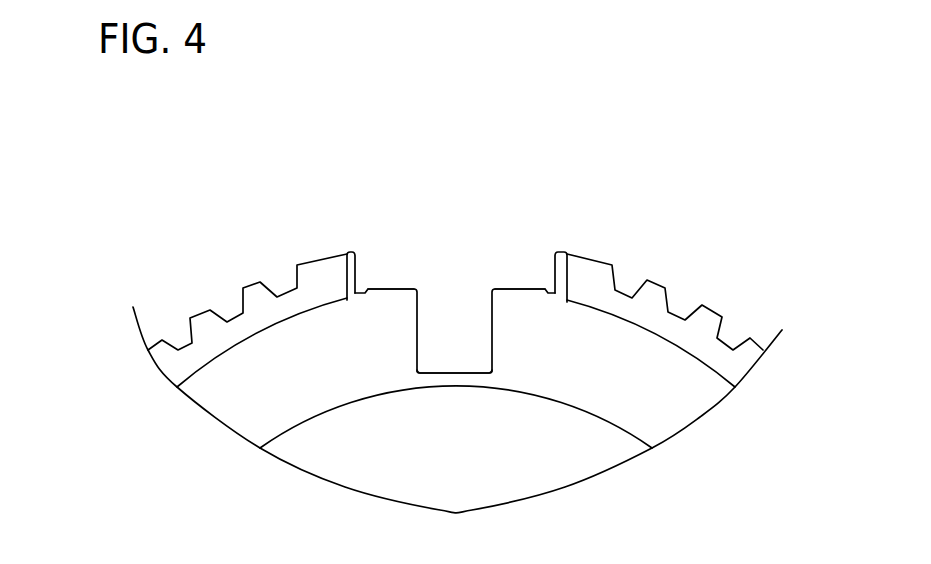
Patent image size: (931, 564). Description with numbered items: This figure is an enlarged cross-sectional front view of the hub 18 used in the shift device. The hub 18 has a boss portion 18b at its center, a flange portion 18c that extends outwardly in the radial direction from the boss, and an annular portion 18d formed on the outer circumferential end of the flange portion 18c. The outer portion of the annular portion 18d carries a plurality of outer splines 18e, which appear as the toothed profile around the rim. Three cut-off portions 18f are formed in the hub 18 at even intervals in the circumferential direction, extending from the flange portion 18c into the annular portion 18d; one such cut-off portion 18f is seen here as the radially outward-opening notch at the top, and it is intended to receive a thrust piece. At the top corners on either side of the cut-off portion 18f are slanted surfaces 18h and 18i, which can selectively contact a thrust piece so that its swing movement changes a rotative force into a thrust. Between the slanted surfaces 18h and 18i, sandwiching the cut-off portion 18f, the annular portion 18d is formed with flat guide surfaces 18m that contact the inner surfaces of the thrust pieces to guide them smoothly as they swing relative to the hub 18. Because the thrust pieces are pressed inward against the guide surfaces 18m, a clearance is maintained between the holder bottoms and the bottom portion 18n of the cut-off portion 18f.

The hub 18 is at (323, 222).
The boss portion 18b is at (498, 463).
The flange portion 18c is at (670, 408).
The annular portion 18d is at (205, 350).
The outer splines 18e is at (653, 297).
The cut-off portion 18f is at (455, 267).
The slanted surface 18h is at (358, 280).
The slanted surface 18i is at (557, 277).
The guide surface 18m is at (395, 287).
The bottom portion 18n is at (463, 368).